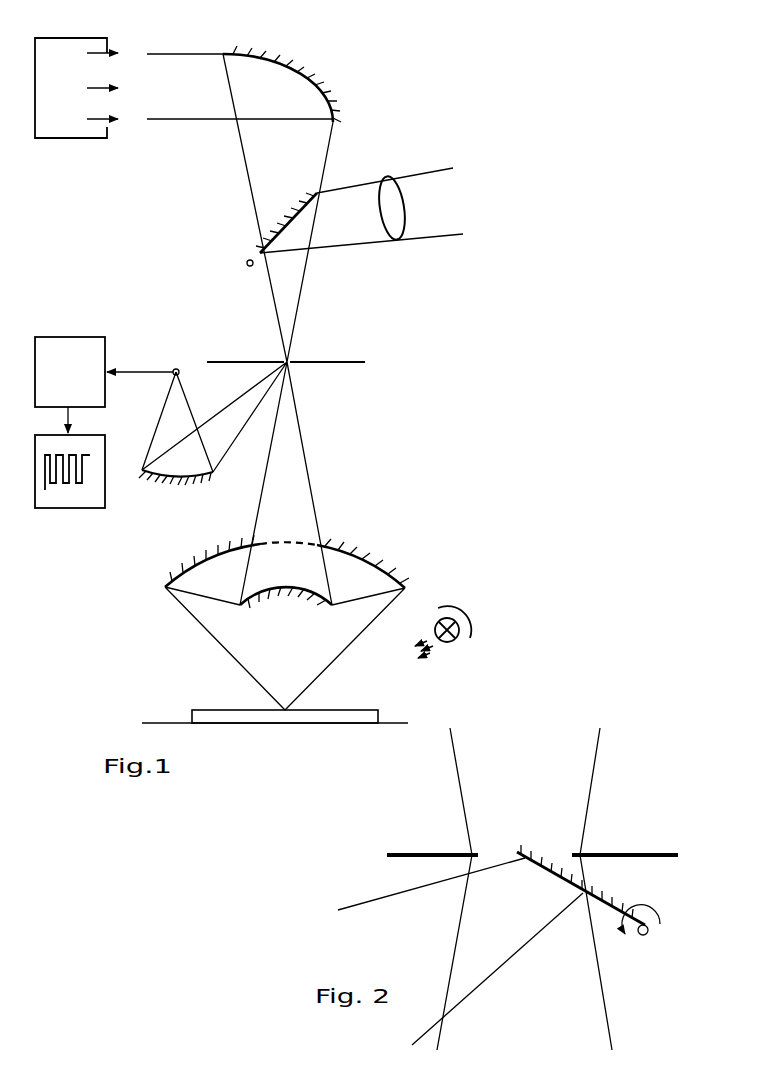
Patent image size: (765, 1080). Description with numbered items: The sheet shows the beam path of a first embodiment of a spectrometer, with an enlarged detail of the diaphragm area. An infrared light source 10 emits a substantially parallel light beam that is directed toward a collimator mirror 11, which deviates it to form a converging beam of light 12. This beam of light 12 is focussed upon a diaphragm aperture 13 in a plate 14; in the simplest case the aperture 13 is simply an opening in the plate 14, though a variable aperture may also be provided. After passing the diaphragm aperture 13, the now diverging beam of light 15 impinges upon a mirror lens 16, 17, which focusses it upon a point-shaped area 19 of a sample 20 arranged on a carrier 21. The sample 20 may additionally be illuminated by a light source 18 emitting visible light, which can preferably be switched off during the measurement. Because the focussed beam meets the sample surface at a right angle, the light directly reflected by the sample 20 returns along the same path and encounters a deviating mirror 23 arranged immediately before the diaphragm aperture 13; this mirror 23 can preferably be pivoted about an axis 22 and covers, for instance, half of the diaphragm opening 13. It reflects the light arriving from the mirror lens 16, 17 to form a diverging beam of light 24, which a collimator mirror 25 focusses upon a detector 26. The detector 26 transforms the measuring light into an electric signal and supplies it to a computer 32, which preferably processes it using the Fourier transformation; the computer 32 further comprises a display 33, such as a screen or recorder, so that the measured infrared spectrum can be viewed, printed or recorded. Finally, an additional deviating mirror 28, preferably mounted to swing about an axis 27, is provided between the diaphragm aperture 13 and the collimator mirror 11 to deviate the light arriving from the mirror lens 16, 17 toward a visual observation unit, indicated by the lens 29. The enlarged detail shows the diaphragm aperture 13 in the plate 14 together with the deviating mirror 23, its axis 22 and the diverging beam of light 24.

In FIG. 1, the infrared light source 10 is at (70, 137).
In FIG. 1, the collimator mirror 11 is at (293, 83).
In FIG. 1, the converging beam of light 12 is at (258, 153).
In FIG. 1, the diaphragm aperture 13 is at (289, 356).
In FIG. 2, the diaphragm aperture 13 is at (492, 853).
In FIG. 1, the plate 14 is at (334, 364).
In FIG. 2, the plate 14 is at (615, 853).
In FIG. 1, the diverging beam of light 15 is at (306, 461).
In FIG. 1, the mirror lens 16 is at (282, 591).
In FIG. 1, the mirror lens 17 is at (222, 553).
In FIG. 1, the light source 18 is at (449, 645).
In FIG. 1, the point-shaped area 19 is at (288, 704).
In FIG. 1, the sample 20 is at (217, 713).
In FIG. 1, the carrier 21 is at (165, 723).
In FIG. 2, the axis 22 is at (650, 931).
In FIG. 2, the deviating mirror 23 is at (611, 899).
In FIG. 1, the diverging beam of light 24 is at (228, 417).
In FIG. 2, the diverging beam of light 24 is at (412, 905).
In FIG. 1, the collimator mirror 25 is at (170, 478).
In FIG. 1, the detector 26 is at (176, 368).
In FIG. 1, the axis 27 is at (252, 268).
In FIG. 1, the additional deviating mirror 28 is at (278, 229).
In FIG. 1, the lens 29 is at (396, 207).
In FIG. 1, the computer 32 is at (85, 345).
In FIG. 1, the display 33 is at (82, 498).